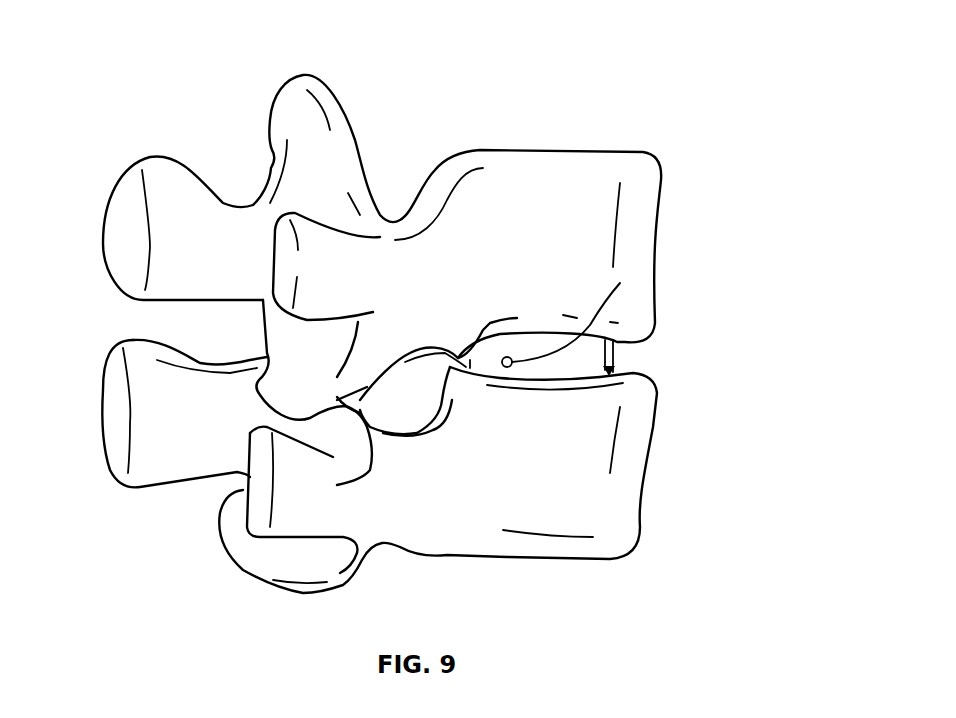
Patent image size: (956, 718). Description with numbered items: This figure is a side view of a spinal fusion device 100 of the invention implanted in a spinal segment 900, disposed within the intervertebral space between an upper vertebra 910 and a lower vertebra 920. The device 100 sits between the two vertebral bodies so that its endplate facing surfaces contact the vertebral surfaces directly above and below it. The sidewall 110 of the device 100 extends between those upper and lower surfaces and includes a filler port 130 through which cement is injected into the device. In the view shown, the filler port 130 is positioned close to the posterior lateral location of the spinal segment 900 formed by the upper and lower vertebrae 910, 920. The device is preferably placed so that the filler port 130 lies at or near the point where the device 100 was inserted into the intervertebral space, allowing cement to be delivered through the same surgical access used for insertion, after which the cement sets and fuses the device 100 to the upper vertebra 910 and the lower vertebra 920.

The spinal segment system 900 is at (188, 66).
The upper vertebra 910 is at (538, 185).
The lower vertebra 920 is at (480, 523).
The spinal fusion device 100 is at (672, 368).
The sidewall 110 is at (617, 372).
The filler port 130 is at (620, 283).